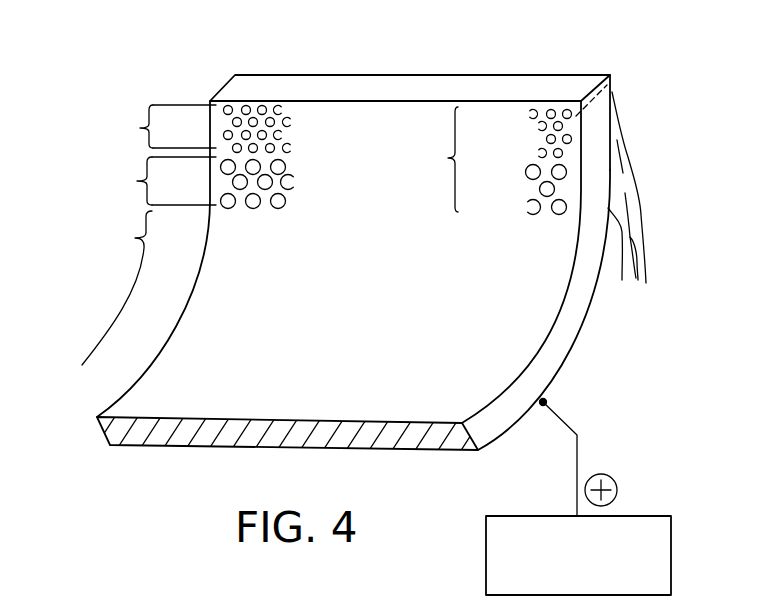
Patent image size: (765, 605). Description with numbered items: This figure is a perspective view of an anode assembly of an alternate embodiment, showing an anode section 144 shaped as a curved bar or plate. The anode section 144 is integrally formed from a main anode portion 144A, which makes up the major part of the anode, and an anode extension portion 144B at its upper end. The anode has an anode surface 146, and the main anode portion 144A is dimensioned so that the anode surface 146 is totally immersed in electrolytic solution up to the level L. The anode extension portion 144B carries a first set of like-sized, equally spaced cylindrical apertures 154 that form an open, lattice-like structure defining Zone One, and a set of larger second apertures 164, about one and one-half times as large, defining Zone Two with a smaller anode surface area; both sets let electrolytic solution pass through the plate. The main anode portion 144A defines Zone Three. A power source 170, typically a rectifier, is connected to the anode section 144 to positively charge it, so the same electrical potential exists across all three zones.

The anode section 144 is at (600, 325).
The main anode portion 144A is at (555, 355).
The anode extension portion 144B is at (448, 158).
The anode surface 146 is at (178, 383).
The first apertures 154 is at (227, 110).
The second apertures 164 is at (253, 201).
The power source 170 is at (638, 517).
The level L is at (603, 95).